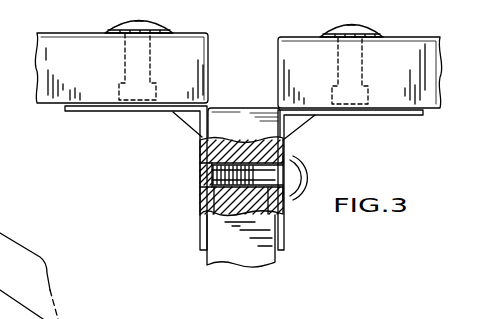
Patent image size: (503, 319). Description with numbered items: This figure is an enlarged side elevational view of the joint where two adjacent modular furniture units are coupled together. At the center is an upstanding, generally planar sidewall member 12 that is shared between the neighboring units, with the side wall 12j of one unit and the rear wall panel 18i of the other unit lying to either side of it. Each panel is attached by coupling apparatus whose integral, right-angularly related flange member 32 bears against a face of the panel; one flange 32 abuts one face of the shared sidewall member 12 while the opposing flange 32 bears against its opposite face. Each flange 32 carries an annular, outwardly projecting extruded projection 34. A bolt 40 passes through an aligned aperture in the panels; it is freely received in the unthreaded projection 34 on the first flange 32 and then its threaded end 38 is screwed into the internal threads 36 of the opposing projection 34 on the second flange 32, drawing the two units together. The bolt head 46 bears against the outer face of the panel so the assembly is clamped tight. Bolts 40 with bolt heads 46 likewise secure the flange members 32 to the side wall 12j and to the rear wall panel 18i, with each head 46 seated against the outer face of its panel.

The sidewall member 12 is at (267, 268).
The side wall 12j is at (58, 33).
The rear wall panel 18i is at (410, 37).
The flange member 32 is at (93, 112).
The extruded projection 34 is at (206, 202).
The internal threads 36 is at (197, 157).
The threaded end 38 is at (244, 145).
The bolt 40 is at (285, 172).
The bolt head 46 is at (150, 23).